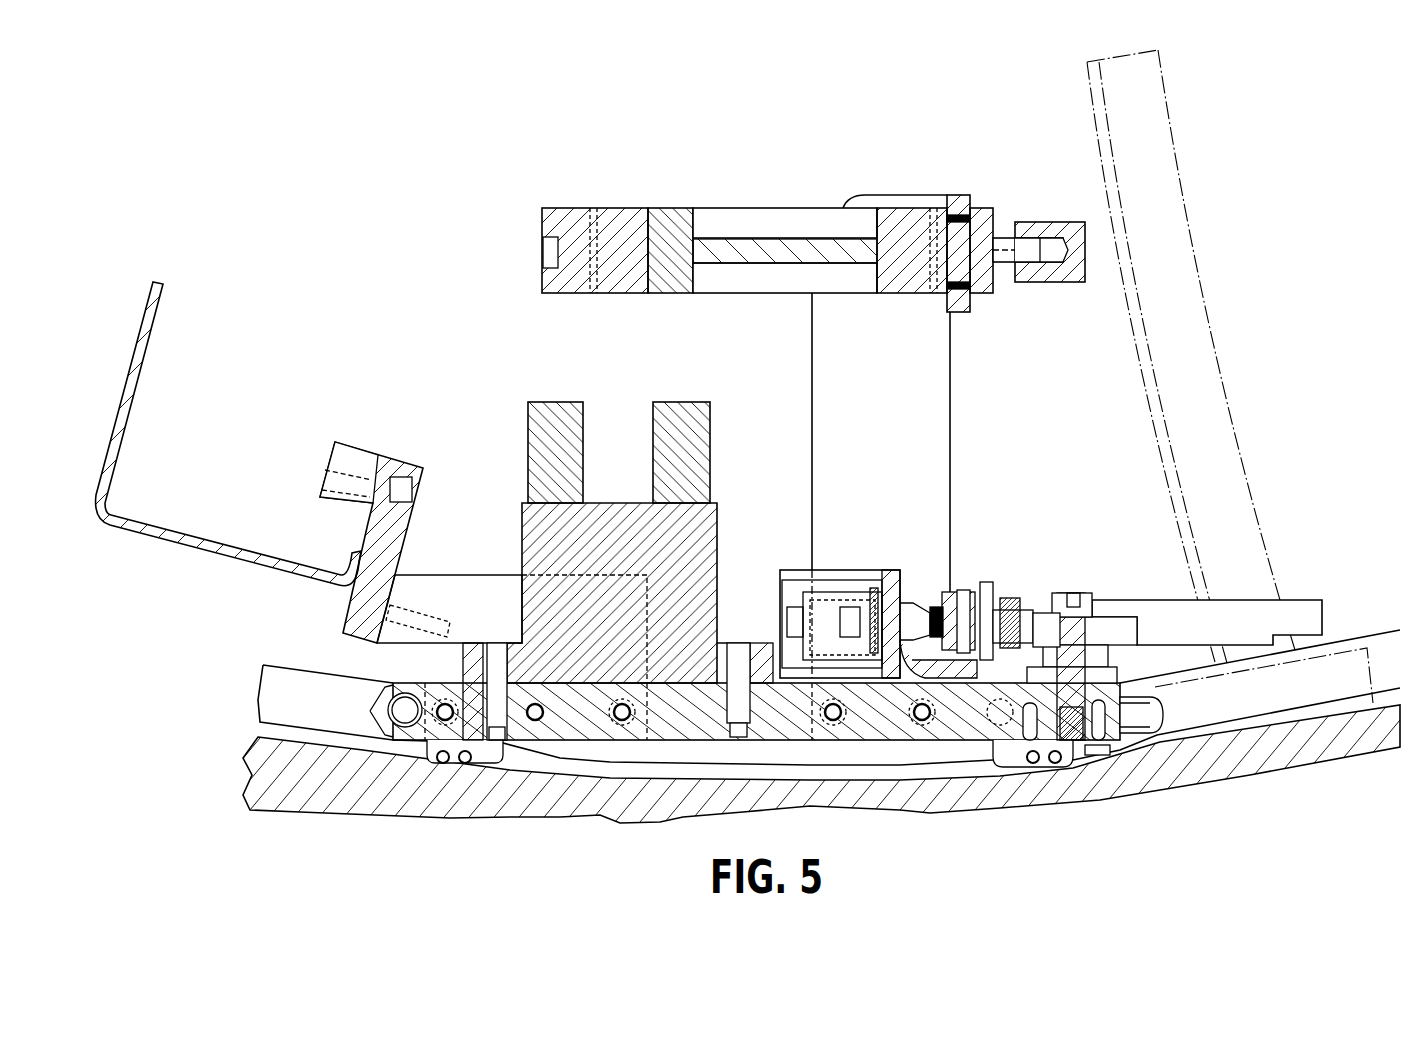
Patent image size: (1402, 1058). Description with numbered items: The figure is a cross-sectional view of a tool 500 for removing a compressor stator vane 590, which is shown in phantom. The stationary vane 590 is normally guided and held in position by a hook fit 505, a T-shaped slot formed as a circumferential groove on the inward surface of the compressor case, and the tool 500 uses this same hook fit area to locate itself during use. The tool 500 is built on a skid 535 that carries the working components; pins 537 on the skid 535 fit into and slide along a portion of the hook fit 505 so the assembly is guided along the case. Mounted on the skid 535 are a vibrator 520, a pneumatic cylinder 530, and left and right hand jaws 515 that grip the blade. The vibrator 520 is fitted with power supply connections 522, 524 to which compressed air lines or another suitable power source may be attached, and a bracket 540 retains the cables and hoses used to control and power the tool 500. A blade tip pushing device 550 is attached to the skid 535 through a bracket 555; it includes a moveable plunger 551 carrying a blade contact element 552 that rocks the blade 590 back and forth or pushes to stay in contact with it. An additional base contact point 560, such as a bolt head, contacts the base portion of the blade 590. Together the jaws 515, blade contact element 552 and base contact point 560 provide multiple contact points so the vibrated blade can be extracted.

The tool 500 is at (709, 486).
The hook fit 505 is at (267, 698).
The jaws 515 is at (1240, 608).
The vibrator 520 is at (717, 545).
The power supply connection 522 is at (553, 405).
The power supply connection 524 is at (672, 407).
The pneumatic cylinder 530 is at (856, 575).
The skid 535 is at (907, 733).
The pins 537 is at (445, 763).
The bracket 540 is at (293, 343).
The blade tip pushing device 550 is at (813, 375).
The moveable plunger 551 is at (723, 257).
The blade contact element 552 is at (1067, 232).
The bracket 555 is at (952, 360).
The base contact point 560 is at (1133, 720).
The stator vane 590 is at (1196, 388).